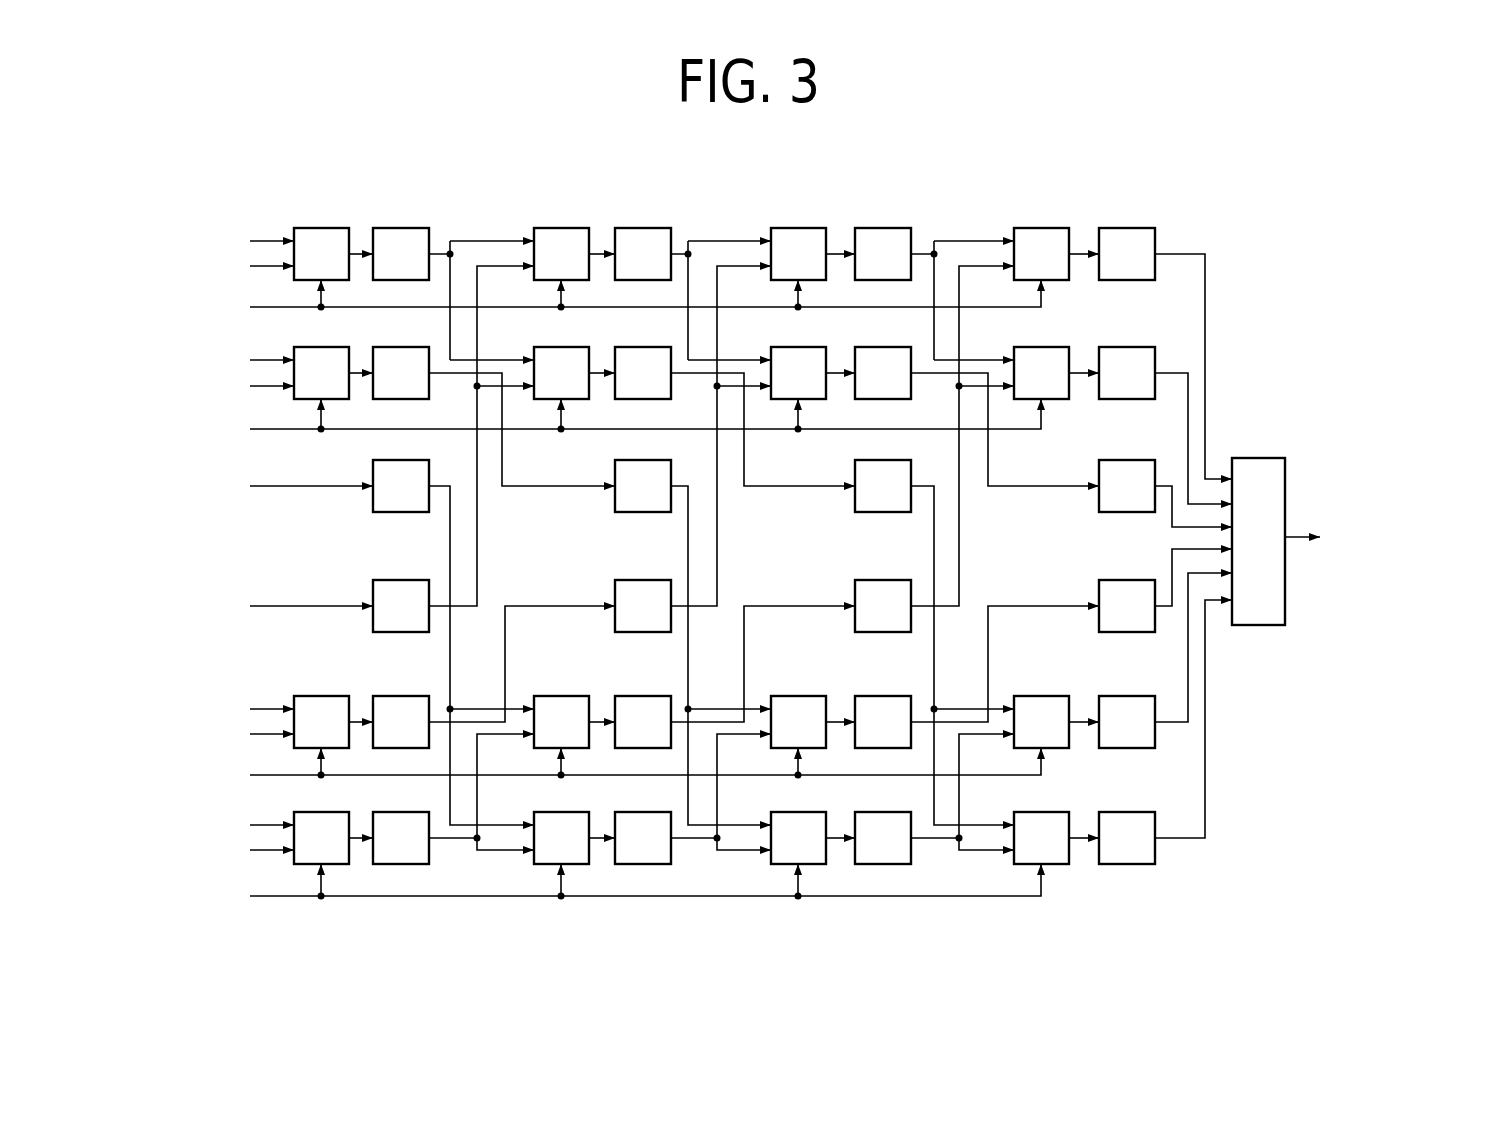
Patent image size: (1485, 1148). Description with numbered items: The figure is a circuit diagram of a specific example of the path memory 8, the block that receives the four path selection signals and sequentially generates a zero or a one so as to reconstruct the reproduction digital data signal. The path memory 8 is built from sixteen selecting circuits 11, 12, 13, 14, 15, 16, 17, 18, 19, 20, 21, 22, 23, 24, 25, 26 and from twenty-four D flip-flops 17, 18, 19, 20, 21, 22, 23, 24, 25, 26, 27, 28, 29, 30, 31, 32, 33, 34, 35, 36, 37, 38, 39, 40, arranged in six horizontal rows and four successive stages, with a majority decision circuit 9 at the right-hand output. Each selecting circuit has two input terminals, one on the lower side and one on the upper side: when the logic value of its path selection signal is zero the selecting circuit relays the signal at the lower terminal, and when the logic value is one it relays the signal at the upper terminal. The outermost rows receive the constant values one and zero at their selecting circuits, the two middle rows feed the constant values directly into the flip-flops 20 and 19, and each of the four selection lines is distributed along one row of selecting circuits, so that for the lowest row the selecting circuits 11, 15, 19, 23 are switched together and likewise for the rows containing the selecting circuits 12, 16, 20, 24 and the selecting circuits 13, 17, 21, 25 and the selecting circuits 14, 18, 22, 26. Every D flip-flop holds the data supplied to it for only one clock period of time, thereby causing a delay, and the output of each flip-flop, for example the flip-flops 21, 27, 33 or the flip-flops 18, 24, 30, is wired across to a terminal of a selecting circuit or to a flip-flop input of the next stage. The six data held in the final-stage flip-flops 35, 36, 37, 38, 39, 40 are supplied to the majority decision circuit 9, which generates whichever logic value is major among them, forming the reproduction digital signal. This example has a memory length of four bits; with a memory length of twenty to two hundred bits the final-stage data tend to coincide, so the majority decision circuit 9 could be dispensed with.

The path memory 8 is at (697, 180).
The majority decision circuit 9 is at (1275, 456).
The selecting circuit S11 11 is at (321, 838).
The selecting circuit S12 12 is at (321, 722).
The selecting circuit S13 13 is at (321, 373).
The selecting circuit S14 14 is at (321, 254).
The selecting circuit S15 15 is at (561, 838).
The selecting circuit S16 16 is at (561, 722).
The selecting circuit S17 / D flip-flop D17 17 is at (561, 373).
The selecting circuit S18 / D flip-flop D18 18 is at (561, 254).
The selecting circuit S19 / D flip-flop D19 19 is at (798, 838).
The selecting circuit S20 / D flip-flop D20 20 is at (798, 722).
The selecting circuit S21 / D flip-flop D21 21 is at (798, 373).
The selecting circuit S22 / D flip-flop D22 22 is at (798, 254).
The selecting circuit S23 / D flip-flop D23 23 is at (1041, 838).
The selecting circuit S24 / D flip-flop D24 24 is at (1041, 722).
The selecting circuit S25 / D flip-flop D25 25 is at (1041, 373).
The selecting circuit S26 / D flip-flop D26 26 is at (1041, 254).
The D flip-flop D27 27 is at (643, 373).
The D flip-flop D28 28 is at (643, 254).
The D flip-flop D29 29 is at (883, 838).
The D flip-flop D30 30 is at (883, 722).
The D flip-flop D31 31 is at (883, 606).
The D flip-flop D32 32 is at (883, 486).
The D flip-flop D33 33 is at (883, 373).
The D flip-flop D34 34 is at (883, 254).
The D flip-flop D35 35 is at (1127, 838).
The D flip-flop D36 36 is at (1127, 722).
The D flip-flop D37 37 is at (1127, 606).
The D flip-flop D38 38 is at (1127, 486).
The D flip-flop D39 39 is at (1127, 373).
The D flip-flop D40 40 is at (1127, 254).